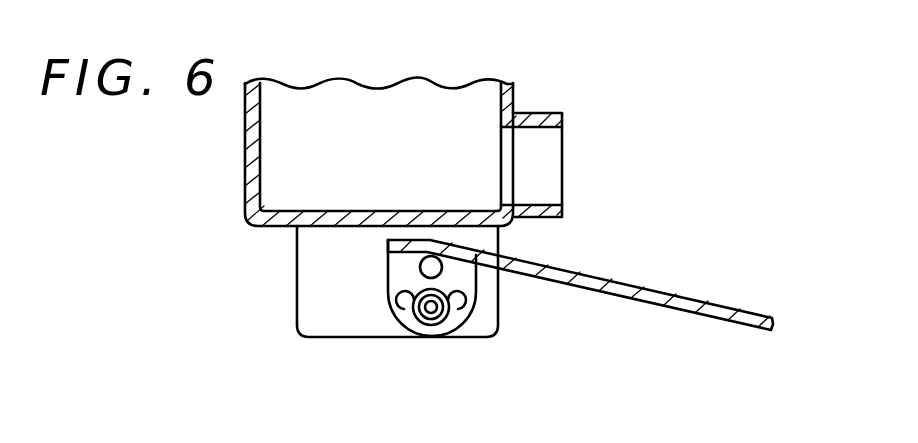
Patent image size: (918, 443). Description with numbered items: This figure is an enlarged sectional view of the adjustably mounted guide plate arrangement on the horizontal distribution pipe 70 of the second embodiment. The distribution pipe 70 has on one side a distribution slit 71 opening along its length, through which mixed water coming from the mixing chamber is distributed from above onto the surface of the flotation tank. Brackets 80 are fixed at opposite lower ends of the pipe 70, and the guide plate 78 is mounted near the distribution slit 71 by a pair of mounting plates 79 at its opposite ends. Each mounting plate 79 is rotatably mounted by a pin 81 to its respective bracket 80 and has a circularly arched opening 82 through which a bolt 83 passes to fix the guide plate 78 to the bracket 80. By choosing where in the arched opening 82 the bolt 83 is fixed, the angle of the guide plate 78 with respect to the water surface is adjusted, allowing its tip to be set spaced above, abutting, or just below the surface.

The distribution pipe 70 is at (245, 157).
The distribution slit 71 is at (553, 163).
The guide plate 78 is at (657, 297).
The mounting plate 79 is at (393, 286).
The bracket 80 is at (297, 302).
The pin 81 is at (420, 270).
The circularly arched opening 82 is at (478, 310).
The bolt 83 is at (432, 322).